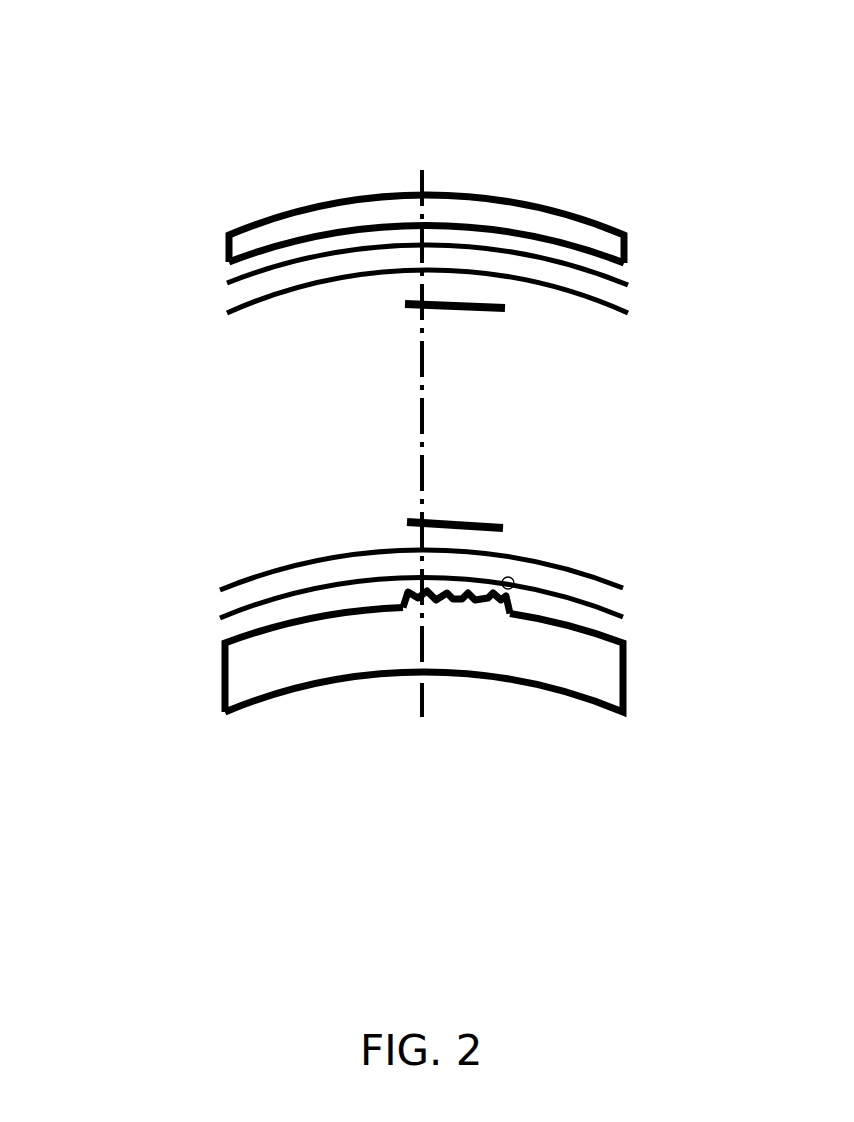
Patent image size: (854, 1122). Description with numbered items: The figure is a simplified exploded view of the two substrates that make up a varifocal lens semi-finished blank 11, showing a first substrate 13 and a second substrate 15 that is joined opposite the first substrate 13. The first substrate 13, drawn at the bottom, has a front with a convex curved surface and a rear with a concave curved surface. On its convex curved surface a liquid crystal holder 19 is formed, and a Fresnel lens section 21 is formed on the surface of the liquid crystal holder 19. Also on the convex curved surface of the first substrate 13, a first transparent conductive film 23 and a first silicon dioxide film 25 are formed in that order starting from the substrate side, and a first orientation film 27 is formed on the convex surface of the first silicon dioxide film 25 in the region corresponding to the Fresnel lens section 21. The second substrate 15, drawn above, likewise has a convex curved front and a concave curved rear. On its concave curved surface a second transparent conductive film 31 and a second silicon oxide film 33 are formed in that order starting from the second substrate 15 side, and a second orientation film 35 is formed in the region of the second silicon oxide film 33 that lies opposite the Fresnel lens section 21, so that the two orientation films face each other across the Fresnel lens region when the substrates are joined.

The varifocal lens semi-finished blank 11 is at (537, 125).
The first substrate 13 is at (608, 670).
The second substrate 15 is at (227, 237).
The liquid crystal holder 19 is at (468, 612).
The Fresnel lens section 21 is at (512, 589).
The first transparent conductive film 23 is at (607, 608).
The first silicon dioxide film 25 is at (608, 575).
The first orientation film 27 is at (475, 520).
The second transparent conductive film 31 is at (227, 285).
The second silicon oxide film 33 is at (227, 307).
The second orientation film 35 is at (418, 308).